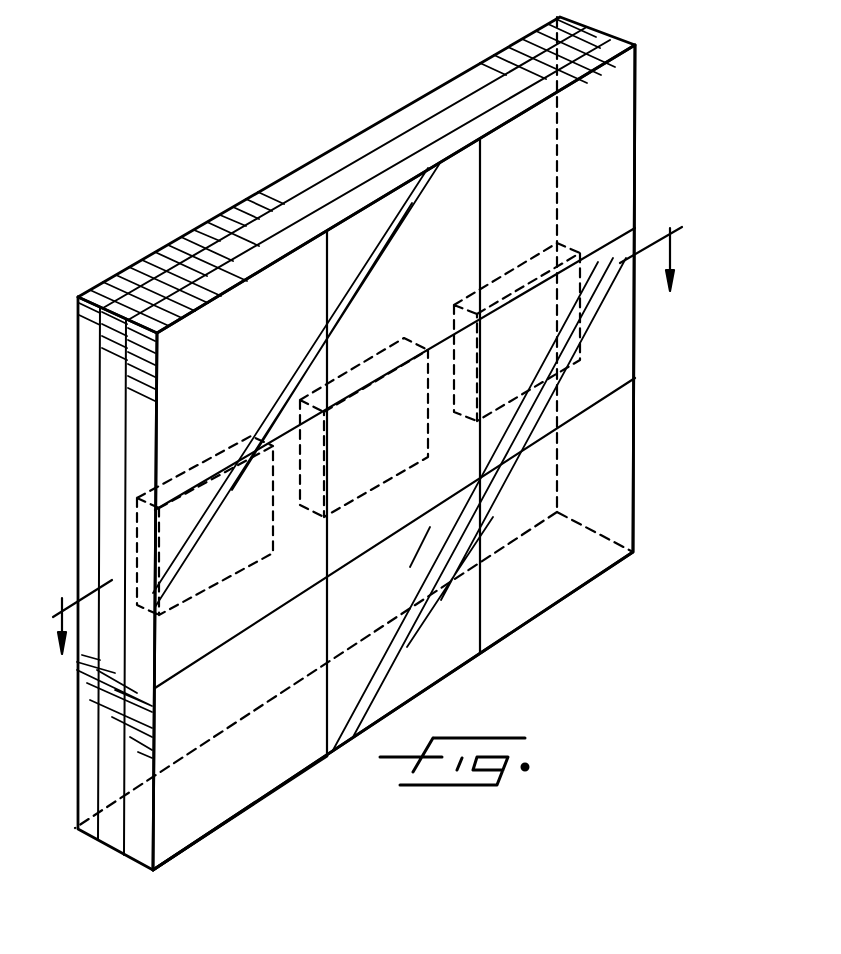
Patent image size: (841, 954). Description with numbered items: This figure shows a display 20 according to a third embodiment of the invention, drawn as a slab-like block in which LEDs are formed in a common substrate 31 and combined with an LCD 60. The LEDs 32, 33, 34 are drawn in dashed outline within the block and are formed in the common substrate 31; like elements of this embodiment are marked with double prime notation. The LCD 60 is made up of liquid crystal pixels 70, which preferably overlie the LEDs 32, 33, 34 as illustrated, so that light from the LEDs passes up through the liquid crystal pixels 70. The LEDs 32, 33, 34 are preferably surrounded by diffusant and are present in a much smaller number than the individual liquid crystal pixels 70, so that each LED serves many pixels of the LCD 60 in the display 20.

The display 20 is at (660, 158).
The common substrate 31 is at (372, 135).
The LCD 60 is at (618, 102).
The liquid crystal pixels 70 is at (610, 356).
The LED 32 is at (517, 332).
The LED 33 is at (364, 427).
The LED 34 is at (205, 525).